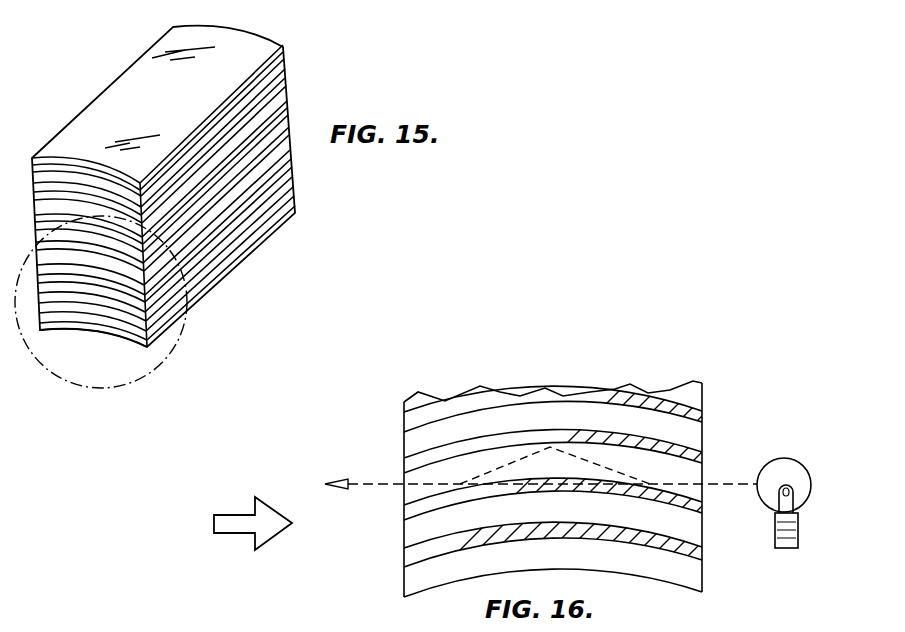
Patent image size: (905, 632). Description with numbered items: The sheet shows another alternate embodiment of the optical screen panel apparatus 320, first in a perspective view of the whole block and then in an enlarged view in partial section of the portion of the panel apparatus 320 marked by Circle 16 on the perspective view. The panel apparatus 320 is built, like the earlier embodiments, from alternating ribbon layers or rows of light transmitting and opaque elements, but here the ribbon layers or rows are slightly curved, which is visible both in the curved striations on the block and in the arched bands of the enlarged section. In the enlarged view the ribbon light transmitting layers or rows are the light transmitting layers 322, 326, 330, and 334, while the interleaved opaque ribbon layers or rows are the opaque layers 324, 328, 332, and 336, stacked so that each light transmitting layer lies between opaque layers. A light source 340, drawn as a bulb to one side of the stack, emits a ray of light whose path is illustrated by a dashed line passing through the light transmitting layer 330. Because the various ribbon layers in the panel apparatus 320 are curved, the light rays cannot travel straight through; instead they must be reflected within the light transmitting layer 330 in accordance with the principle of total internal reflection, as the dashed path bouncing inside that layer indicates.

In FIG. 15, the optical screen panel apparatus 320 is at (299, 85).
In FIG. 16, the optical screen panel apparatus 320 is at (588, 377).
In FIG. 15, the Circle 16 is at (70, 388).
In FIG. 16, the light transmitting layer 322 is at (402, 577).
In FIG. 16, the opaque layer 324 is at (402, 567).
In FIG. 16, the light transmitting layer 326 is at (402, 541).
In FIG. 16, the opaque layer 328 is at (402, 518).
In FIG. 16, the light transmitting layer 330 is at (700, 478).
In FIG. 16, the opaque layer 332 is at (402, 466).
In FIG. 16, the light transmitting layer 334 is at (402, 442).
In FIG. 16, the opaque layer 336 is at (702, 421).
In FIG. 16, the light source 340 is at (798, 462).